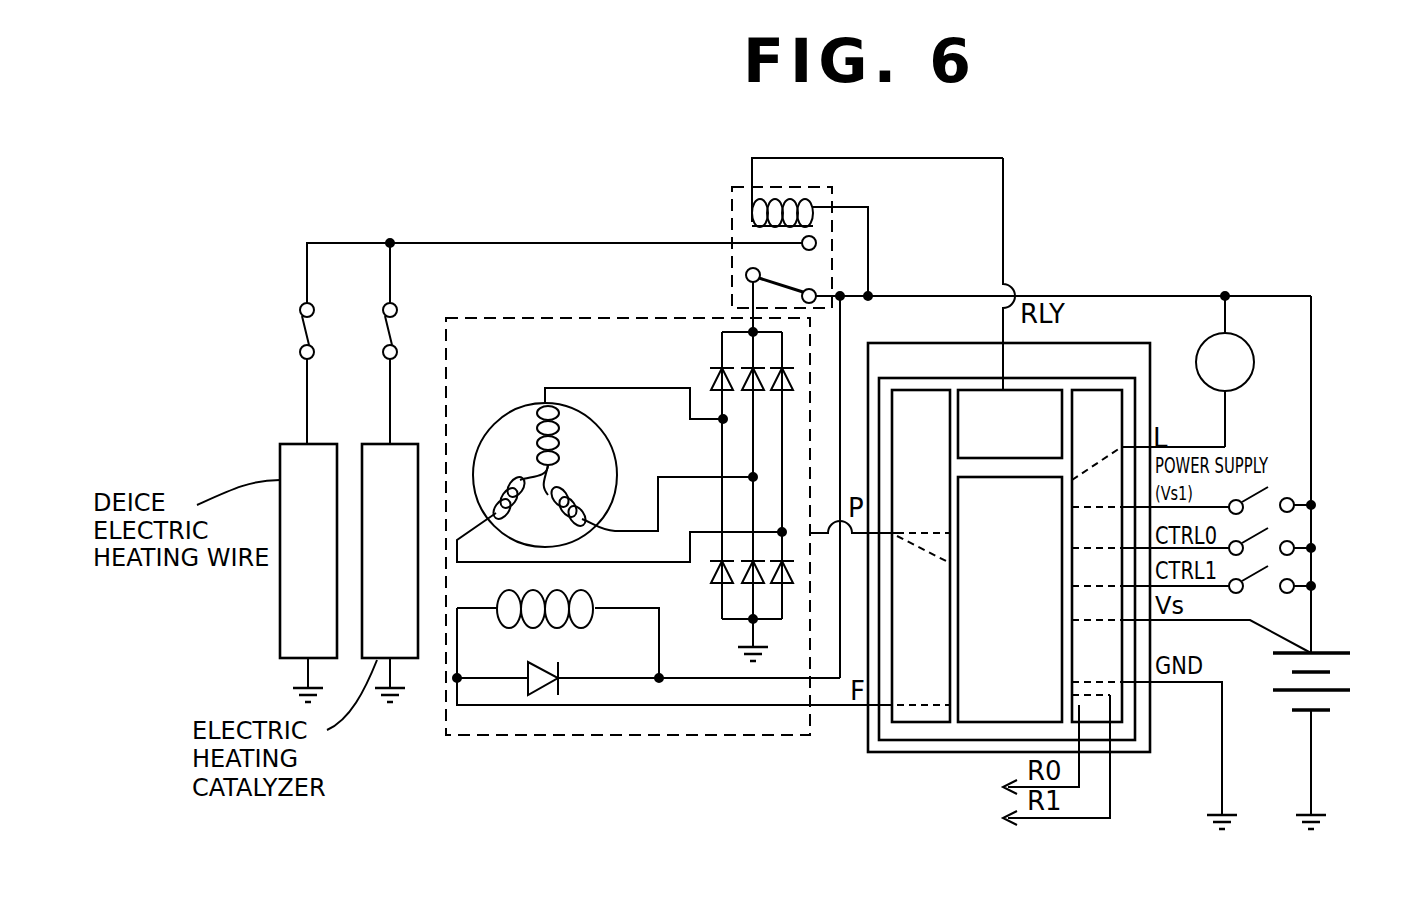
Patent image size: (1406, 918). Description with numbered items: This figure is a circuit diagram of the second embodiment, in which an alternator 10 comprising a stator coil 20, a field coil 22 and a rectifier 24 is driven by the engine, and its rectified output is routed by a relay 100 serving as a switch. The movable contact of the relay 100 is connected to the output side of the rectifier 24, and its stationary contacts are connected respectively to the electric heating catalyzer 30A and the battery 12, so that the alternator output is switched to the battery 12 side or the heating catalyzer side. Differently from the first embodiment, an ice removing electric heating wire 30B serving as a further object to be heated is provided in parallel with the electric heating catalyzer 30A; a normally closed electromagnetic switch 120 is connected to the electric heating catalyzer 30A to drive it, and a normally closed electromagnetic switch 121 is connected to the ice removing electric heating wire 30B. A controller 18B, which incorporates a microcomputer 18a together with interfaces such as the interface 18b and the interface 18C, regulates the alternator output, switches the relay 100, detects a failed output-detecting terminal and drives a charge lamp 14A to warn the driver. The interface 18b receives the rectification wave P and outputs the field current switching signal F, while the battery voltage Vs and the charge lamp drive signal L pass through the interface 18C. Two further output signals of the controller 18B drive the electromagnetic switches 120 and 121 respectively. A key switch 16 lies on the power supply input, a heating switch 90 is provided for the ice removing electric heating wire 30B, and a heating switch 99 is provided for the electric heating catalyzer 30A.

The relay 100 is at (730, 200).
The electromagnetic switch 121 is at (292, 302).
The electromagnetic switch 120 is at (383, 302).
The ice removing electric heating wire 30B is at (297, 441).
The electric heating catalyzer 30A is at (380, 441).
The alternator 10 is at (507, 318).
The stator coil 20 is at (503, 420).
The rectifier 24 is at (708, 378).
The field coil 22 is at (497, 624).
The controller 18B is at (1092, 345).
The interface 18b is at (900, 742).
The microcomputer 18a is at (975, 723).
The interface 18C is at (1115, 727).
The charge lamp 14A is at (1237, 332).
The key switch 16 is at (1276, 480).
The heating switch 90 is at (1272, 528).
The heating switch 99 is at (1272, 566).
The battery 12 is at (1332, 680).